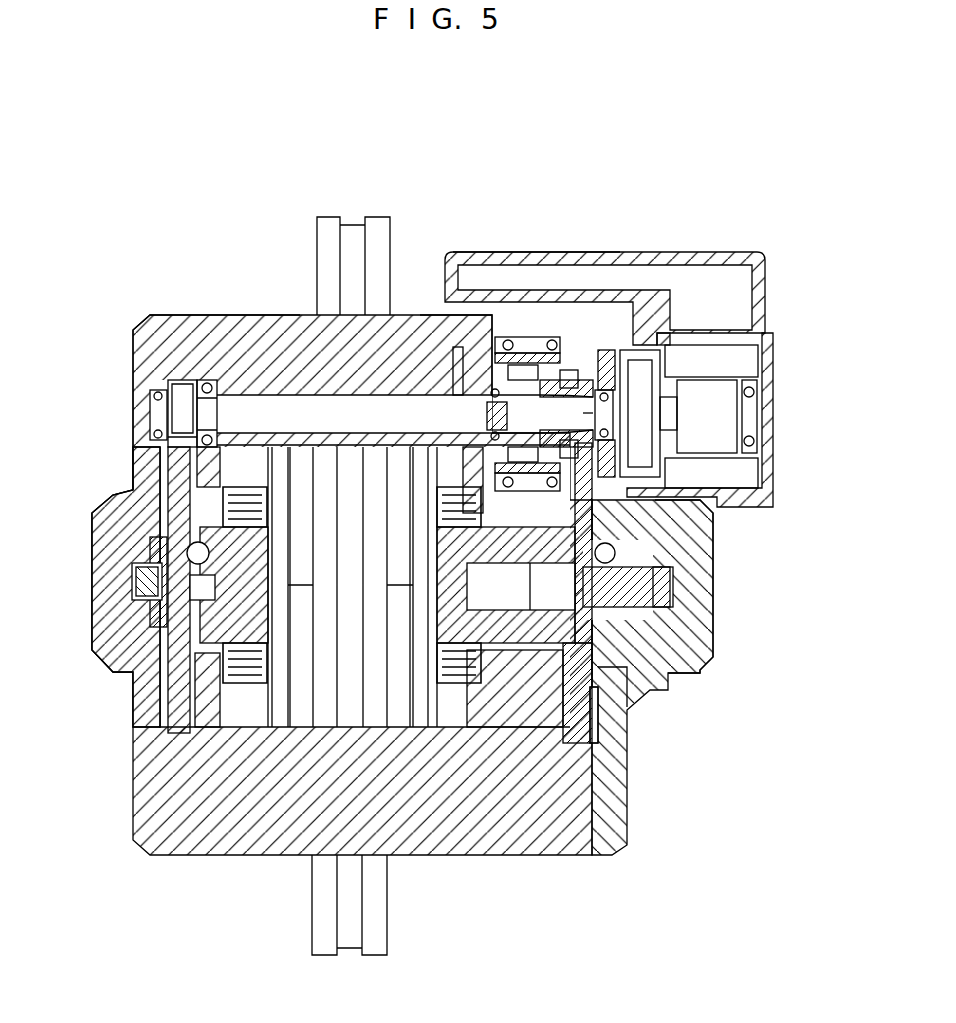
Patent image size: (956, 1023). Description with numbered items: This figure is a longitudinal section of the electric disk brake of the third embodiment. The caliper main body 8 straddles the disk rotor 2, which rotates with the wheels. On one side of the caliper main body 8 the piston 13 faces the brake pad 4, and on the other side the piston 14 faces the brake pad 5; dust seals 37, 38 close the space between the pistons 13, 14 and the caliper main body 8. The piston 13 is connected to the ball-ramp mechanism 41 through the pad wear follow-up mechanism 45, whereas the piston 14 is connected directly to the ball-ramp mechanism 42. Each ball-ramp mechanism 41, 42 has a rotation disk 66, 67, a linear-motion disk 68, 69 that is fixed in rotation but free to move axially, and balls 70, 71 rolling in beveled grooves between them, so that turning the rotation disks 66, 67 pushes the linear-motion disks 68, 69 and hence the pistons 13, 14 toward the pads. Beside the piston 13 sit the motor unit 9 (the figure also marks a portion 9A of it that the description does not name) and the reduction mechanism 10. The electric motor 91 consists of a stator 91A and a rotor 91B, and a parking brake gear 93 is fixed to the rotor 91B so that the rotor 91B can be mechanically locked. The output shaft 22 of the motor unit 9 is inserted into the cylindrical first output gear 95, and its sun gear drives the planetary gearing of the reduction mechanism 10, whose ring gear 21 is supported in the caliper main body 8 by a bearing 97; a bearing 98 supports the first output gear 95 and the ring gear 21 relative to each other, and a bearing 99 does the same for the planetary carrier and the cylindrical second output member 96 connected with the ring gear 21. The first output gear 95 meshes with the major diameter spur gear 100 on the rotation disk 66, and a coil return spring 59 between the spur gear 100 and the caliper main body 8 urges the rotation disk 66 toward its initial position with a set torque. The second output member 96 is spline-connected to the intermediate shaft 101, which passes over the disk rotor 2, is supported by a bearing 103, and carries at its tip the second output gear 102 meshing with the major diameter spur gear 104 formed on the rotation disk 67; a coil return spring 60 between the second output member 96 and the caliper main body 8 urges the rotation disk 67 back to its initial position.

The disk rotor 2 is at (328, 237).
The brake pad 4 is at (405, 717).
The brake pad 5 is at (298, 705).
The caliper main body 8 is at (582, 817).
The motor unit 9 is at (768, 272).
The bracket cover 9A is at (534, 252).
The reduction mechanism 10 is at (566, 370).
The piston 13 is at (460, 700).
The piston 14 is at (258, 700).
The ring gear 21 is at (522, 362).
The output shaft 22 is at (690, 393).
The dust seal 37 is at (480, 700).
The dust seal 38 is at (237, 697).
The ball-ramp mechanism 41 is at (673, 597).
The ball-ramp mechanism 42 is at (127, 577).
The pad wear follow-up mechanism 45 is at (578, 743).
The coil return spring 59 is at (650, 670).
The coil return spring 60 is at (453, 370).
The rotation disk 66 is at (690, 633).
The rotation disk 67 is at (180, 487).
The linear-motion disk 68 is at (607, 680).
The linear-motion disk 69 is at (197, 615).
The ball 70 is at (700, 537).
The ball 71 is at (170, 543).
The electric motor 91 is at (840, 358).
The stator 91A is at (748, 363).
The rotor 91B is at (723, 417).
The parking brake gear 93 is at (640, 350).
The first output gear 95 is at (583, 413).
The second output member 96 is at (430, 340).
The bearing 97 is at (510, 337).
The bearing 98 is at (606, 350).
The bearing 99 is at (500, 365).
The major diameter spur gear 100 is at (580, 817).
The intermediate shaft 101 is at (282, 407).
The second output gear 102 is at (182, 382).
The bearing 103 is at (207, 380).
The major diameter spur gear 104 is at (180, 735).